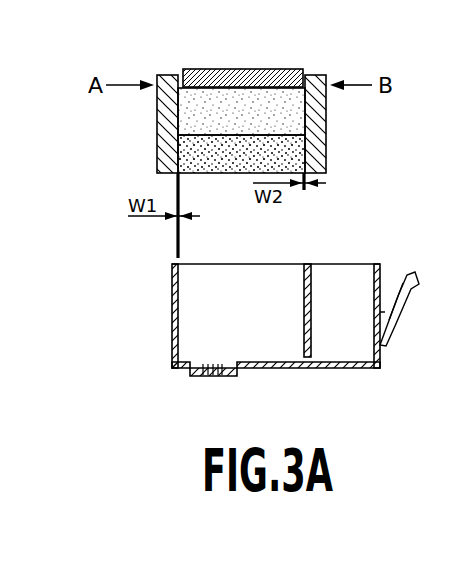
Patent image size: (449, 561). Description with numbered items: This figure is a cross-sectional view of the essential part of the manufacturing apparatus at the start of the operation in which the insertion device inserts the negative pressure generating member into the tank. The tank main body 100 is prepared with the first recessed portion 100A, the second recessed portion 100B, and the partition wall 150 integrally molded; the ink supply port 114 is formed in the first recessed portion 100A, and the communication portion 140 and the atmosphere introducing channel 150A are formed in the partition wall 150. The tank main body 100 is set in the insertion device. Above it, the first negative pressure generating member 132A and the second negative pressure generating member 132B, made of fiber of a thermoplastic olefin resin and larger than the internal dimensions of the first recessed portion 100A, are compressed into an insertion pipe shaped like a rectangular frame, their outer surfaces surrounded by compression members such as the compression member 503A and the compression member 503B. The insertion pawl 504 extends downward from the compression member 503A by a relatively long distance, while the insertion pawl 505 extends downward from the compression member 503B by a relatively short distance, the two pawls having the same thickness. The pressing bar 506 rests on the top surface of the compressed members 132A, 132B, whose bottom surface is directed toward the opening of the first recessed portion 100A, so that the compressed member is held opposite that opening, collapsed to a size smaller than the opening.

The pressing bar 506 is at (270, 70).
The compression member 503A is at (157, 110).
The compression member 503B is at (327, 110).
The first negative pressure generating member 132A is at (162, 162).
The second negative pressure generating member 132B is at (318, 150).
The insertion pawl 504 is at (176, 256).
The insertion pawl 505 is at (308, 178).
The tank main body 100 is at (250, 341).
The first recessed portion 100A is at (178, 352).
The second recessed portion 100B is at (357, 372).
The ink supply port 114 is at (222, 378).
The partition wall 150 is at (307, 310).
The atmosphere introducing channel 150A is at (312, 352).
The communication portion 140 is at (318, 352).